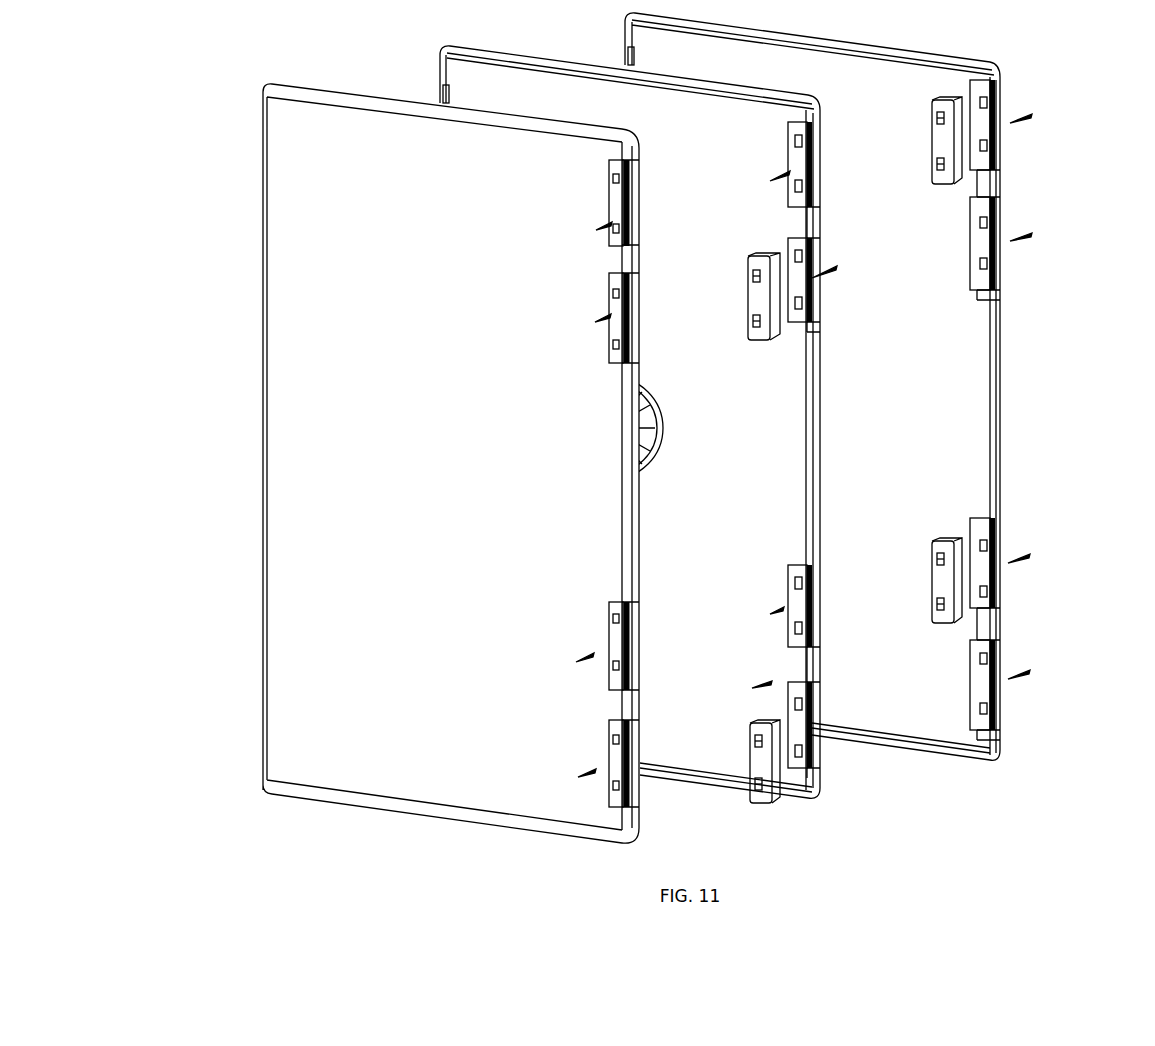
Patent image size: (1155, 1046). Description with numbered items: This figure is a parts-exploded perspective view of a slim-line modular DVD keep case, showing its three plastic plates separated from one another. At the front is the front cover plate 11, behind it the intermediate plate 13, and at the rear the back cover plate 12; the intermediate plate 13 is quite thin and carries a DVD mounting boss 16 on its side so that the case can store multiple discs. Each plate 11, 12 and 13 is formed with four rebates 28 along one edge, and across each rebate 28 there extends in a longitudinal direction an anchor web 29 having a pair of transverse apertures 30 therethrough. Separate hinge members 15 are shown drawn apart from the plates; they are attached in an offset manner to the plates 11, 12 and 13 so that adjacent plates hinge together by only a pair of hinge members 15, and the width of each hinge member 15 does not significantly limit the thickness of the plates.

The front cover plate 11 is at (285, 582).
The back cover plate 12 is at (975, 457).
The intermediate plate 13 is at (770, 488).
The hinge member 15 is at (937, 146).
The DVD mounting boss 16 is at (662, 440).
The rebate 28 is at (608, 225).
The anchor web 29 is at (620, 204).
The transverse aperture 30 is at (614, 181).